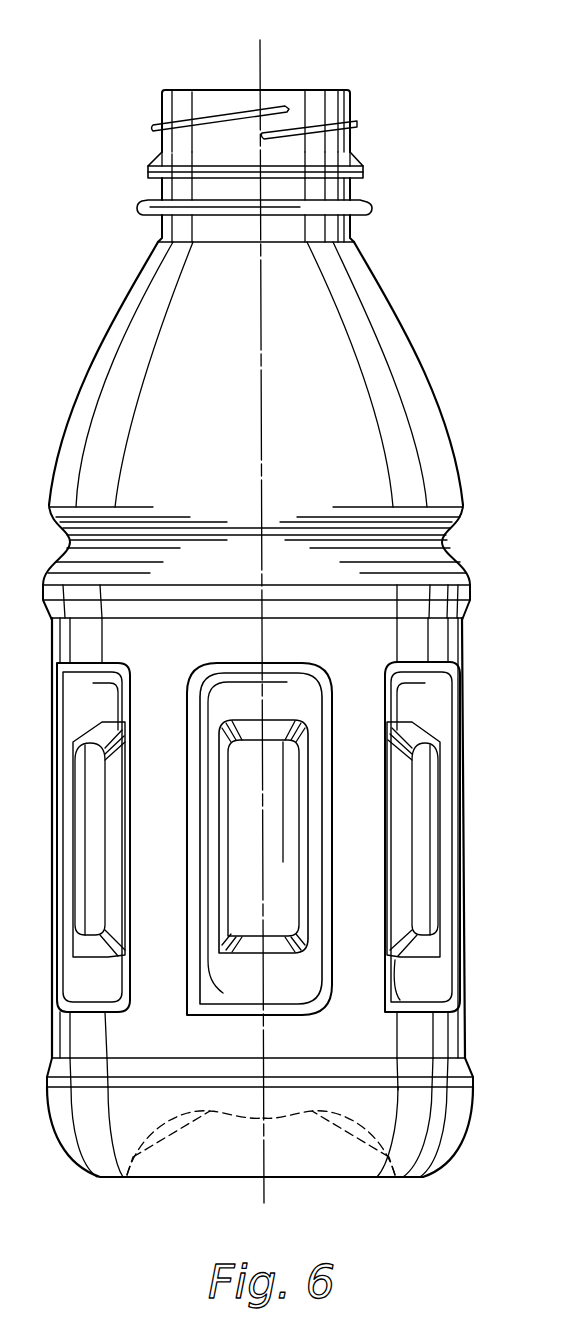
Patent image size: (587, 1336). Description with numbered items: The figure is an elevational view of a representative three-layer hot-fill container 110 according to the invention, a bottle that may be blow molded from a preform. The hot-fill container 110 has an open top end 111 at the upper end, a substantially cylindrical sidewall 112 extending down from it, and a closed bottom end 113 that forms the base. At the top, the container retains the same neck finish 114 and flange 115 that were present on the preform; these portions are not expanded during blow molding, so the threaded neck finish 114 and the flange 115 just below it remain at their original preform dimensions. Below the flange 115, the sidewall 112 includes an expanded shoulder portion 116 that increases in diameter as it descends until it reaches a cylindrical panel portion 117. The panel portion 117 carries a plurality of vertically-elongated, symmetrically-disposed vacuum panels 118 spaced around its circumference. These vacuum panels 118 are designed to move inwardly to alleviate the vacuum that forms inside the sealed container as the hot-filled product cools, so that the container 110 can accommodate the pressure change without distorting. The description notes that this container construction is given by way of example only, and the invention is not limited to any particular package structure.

The hot-fill container 110 is at (484, 292).
The open top end 111 is at (327, 90).
The sidewall 112 is at (465, 741).
The closed bottom end 113 is at (373, 1177).
The neck finish 114 is at (357, 121).
The flange 115 is at (373, 210).
The shoulder portion 116 is at (453, 442).
The panel portion 117 is at (464, 663).
The vacuum panels 118 is at (437, 977).